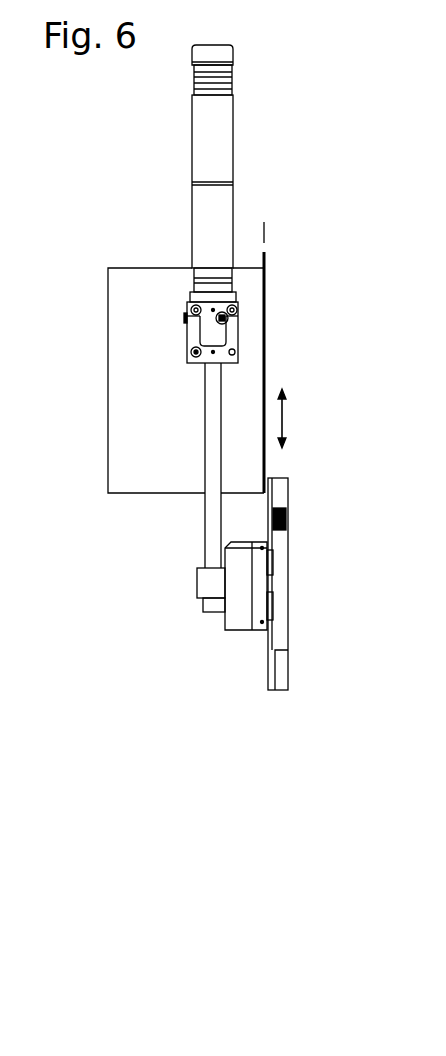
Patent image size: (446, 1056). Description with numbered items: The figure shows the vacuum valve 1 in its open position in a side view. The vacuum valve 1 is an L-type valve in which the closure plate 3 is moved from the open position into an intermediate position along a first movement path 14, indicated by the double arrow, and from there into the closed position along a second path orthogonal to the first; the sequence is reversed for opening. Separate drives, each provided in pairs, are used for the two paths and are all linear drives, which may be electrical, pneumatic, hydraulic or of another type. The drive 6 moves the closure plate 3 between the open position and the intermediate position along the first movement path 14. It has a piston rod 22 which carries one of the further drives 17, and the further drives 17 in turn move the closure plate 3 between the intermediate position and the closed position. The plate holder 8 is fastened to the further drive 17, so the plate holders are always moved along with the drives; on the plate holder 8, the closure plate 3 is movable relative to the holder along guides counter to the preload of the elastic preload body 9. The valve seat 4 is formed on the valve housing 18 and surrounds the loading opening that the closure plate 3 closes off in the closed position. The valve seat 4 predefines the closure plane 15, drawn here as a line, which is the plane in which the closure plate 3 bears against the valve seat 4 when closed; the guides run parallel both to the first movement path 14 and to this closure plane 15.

The vacuum valve 1 is at (148, 155).
The closure plate 3 is at (282, 492).
The valve seat 4 is at (264, 323).
The drive 6 is at (223, 145).
The plate holder 8 is at (280, 588).
The elastic preload body 9 is at (286, 517).
The first movement path 14 is at (282, 418).
The closure plane 15 is at (264, 228).
The further drive 17 is at (258, 607).
The valve housing 18 is at (152, 482).
The piston rod 22 is at (212, 397).